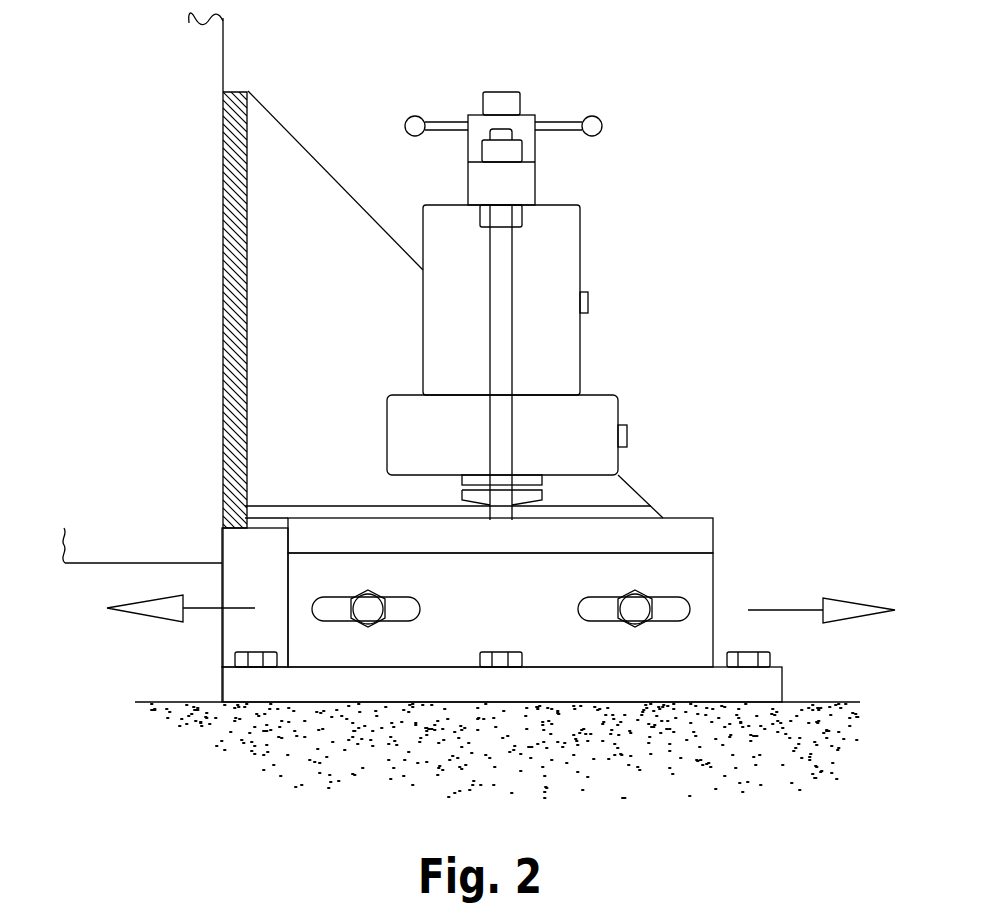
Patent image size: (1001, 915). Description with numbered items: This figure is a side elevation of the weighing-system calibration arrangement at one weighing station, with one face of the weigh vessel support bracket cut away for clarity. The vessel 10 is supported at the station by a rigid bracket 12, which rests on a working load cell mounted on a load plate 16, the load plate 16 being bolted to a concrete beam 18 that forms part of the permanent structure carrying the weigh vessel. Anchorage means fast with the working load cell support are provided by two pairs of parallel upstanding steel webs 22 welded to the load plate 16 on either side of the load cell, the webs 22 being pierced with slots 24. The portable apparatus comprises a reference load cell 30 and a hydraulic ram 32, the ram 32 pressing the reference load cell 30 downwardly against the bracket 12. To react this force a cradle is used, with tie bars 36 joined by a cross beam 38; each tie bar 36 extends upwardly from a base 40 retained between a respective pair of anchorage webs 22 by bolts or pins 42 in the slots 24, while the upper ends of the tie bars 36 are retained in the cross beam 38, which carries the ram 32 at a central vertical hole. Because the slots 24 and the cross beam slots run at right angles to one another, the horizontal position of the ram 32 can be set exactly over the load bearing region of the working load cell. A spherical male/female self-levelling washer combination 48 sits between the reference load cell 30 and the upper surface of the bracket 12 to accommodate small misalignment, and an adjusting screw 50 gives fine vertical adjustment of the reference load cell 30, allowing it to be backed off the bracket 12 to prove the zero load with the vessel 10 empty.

The vessel 10 is at (200, 62).
The rigid bracket 12 is at (293, 175).
The load plate 16 is at (760, 683).
The concrete beam 18 is at (205, 730).
The upstanding steel webs 22 is at (695, 585).
The slots 24 is at (410, 606).
The reference load cell 30 is at (598, 418).
The hydraulic ram 32 is at (565, 262).
The tie bars 36 is at (497, 335).
The cross beam 38 is at (468, 180).
The base 40 is at (695, 533).
The bolts or pins 42 is at (370, 602).
The spherical self-levelling washer combination 48 is at (545, 497).
The adjusting screw 50 is at (414, 112).